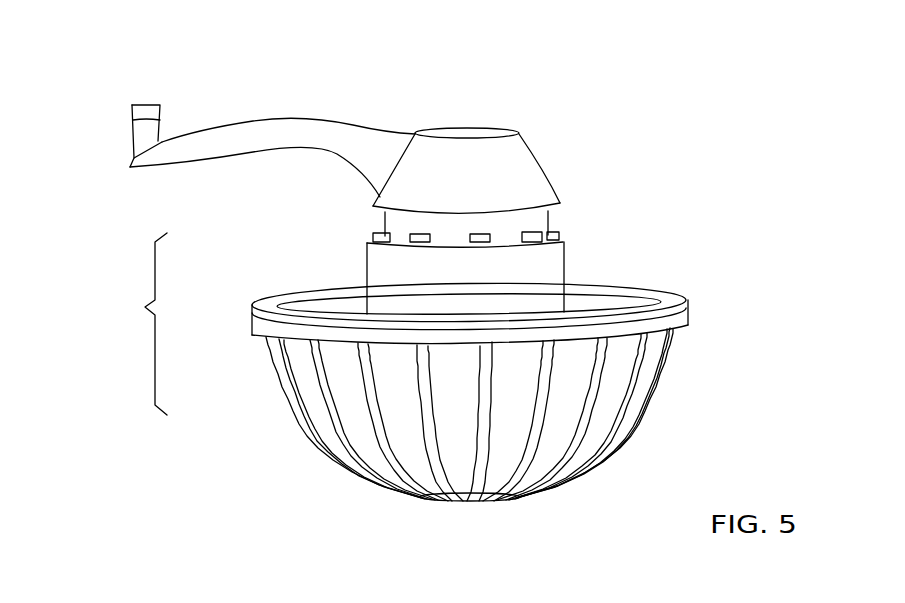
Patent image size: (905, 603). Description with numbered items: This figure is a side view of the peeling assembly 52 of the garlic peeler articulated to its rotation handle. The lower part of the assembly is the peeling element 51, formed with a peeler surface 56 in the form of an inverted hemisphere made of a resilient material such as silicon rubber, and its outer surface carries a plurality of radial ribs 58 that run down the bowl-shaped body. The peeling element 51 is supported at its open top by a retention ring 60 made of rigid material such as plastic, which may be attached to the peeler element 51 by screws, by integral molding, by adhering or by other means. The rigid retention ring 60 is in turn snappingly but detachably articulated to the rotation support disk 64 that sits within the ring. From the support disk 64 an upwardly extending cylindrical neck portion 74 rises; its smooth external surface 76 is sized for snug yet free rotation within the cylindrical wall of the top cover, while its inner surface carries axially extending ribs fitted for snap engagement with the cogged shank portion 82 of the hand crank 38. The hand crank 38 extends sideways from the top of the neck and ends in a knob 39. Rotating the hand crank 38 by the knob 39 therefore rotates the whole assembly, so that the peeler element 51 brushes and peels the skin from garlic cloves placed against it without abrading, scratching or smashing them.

The hand crank 38 is at (237, 142).
The knob 39 is at (148, 110).
The peeling element 51 is at (297, 434).
The peeling assembly 52 is at (138, 324).
The peeler surface 56 is at (390, 478).
The radial ribs 58 is at (520, 485).
The retention ring 60 is at (250, 326).
The rotation support disk 64 is at (249, 310).
The cylindrical neck portion 74 is at (565, 235).
The smooth external surface 76 is at (548, 268).
The cogged shank portion 82 is at (405, 237).